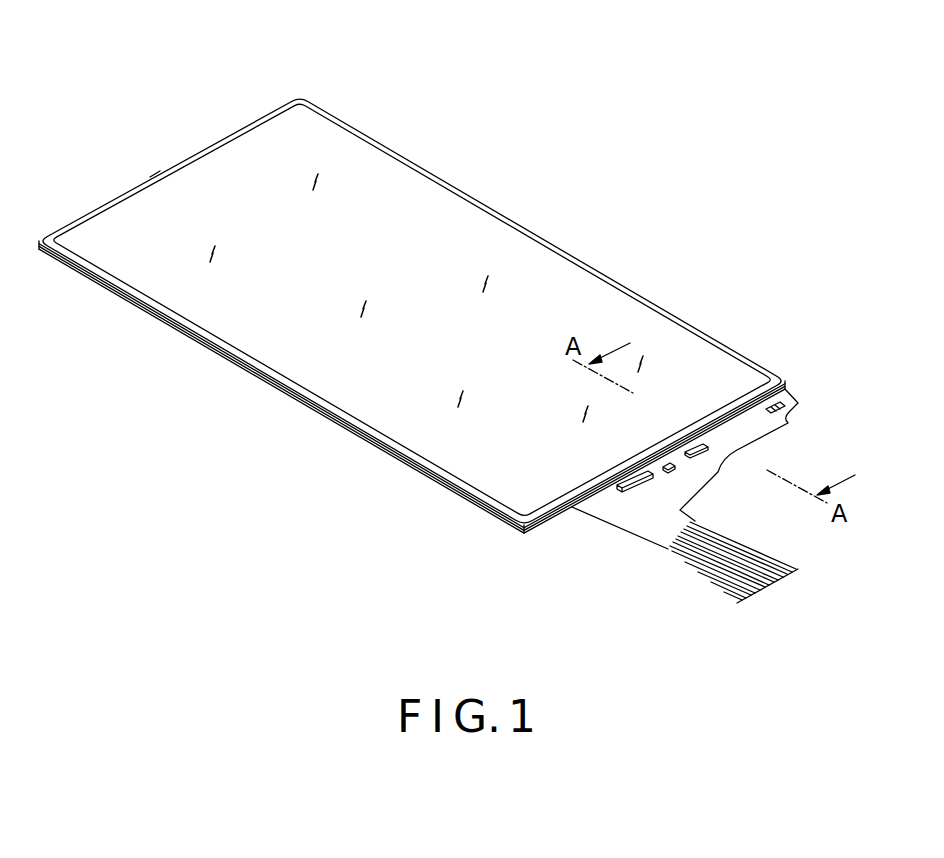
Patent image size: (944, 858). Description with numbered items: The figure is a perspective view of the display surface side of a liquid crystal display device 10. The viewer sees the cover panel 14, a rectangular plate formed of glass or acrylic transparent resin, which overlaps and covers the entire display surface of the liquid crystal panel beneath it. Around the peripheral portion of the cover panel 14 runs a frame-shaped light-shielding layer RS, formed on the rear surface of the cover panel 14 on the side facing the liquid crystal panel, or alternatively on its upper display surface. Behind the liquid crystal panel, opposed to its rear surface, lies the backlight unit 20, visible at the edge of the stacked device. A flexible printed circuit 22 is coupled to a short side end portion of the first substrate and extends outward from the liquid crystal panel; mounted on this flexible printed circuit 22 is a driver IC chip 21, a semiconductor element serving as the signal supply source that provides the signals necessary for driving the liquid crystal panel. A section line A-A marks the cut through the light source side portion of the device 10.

The liquid crystal display device 10 is at (412, 318).
The cover panel 14 is at (493, 237).
The backlight unit 20 is at (499, 519).
The driver IC chip 21 is at (633, 493).
The flexible printed circuit 22 is at (658, 512).
The light-shielding layer RS is at (148, 179).